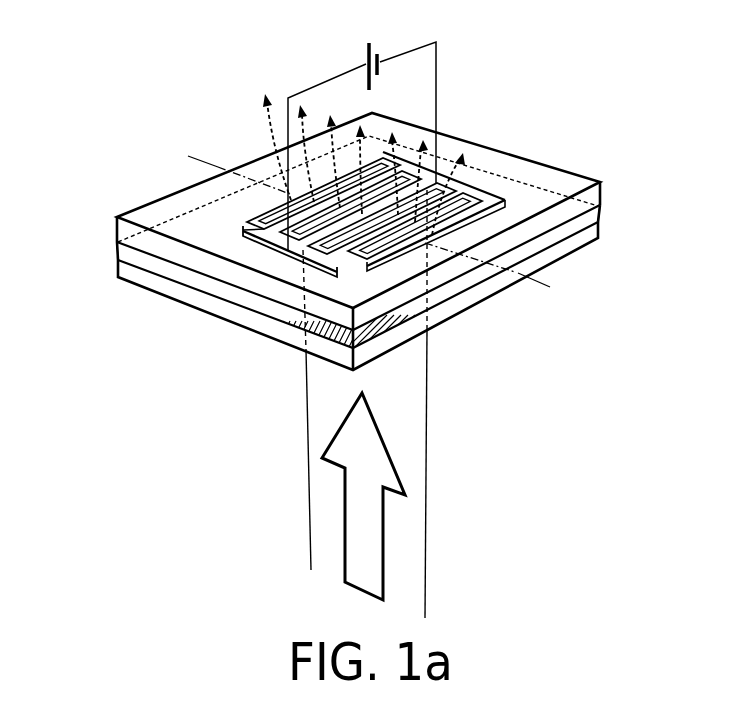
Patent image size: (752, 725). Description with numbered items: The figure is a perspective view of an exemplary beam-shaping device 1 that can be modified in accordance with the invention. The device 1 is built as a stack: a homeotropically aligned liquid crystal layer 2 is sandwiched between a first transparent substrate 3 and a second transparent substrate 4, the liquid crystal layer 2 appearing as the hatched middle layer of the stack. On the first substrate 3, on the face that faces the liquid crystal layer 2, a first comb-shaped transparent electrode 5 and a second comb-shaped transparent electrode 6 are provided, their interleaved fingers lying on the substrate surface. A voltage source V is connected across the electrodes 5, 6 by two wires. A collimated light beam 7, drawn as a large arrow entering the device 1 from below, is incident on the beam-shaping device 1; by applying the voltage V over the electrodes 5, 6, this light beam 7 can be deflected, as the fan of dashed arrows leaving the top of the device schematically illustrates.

The beam-shaping device 1 is at (356, 316).
The liquid crystal layer 2 is at (117, 252).
The first transparent substrate 3 is at (117, 226).
The second transparent substrate 4 is at (117, 267).
The first comb-shaped transparent electrode 5 is at (253, 233).
The second comb-shaped transparent electrode 6 is at (492, 201).
The collimated light beam 7 is at (412, 513).